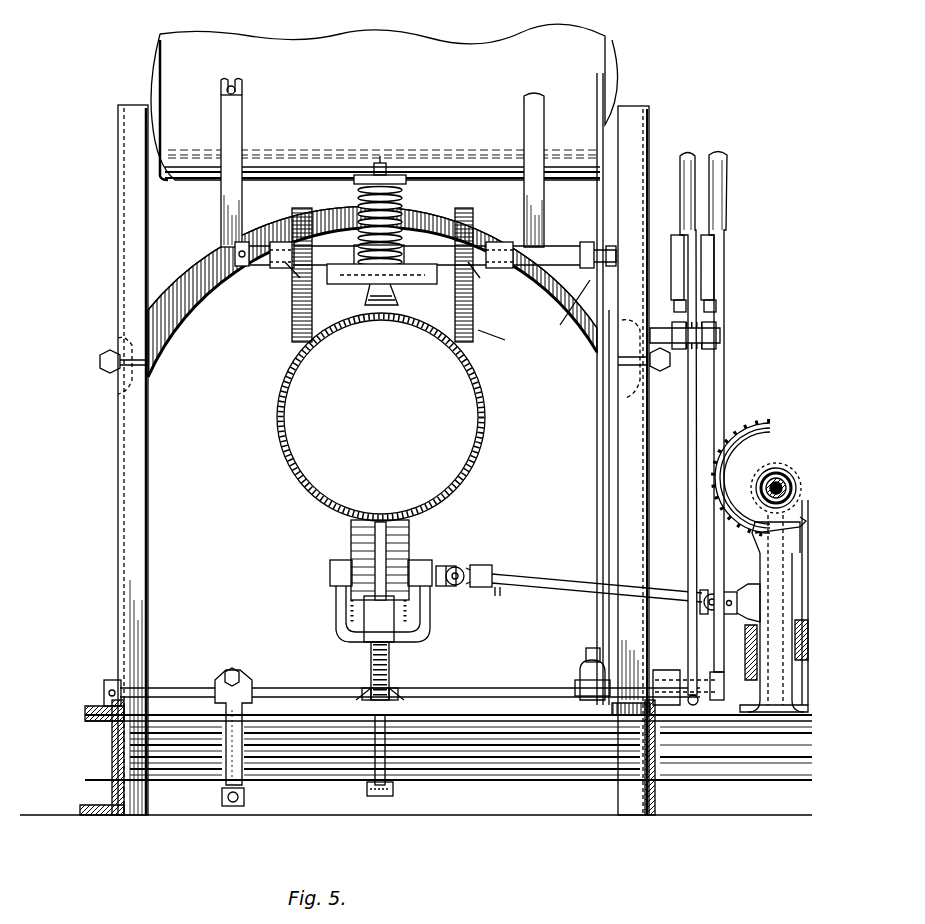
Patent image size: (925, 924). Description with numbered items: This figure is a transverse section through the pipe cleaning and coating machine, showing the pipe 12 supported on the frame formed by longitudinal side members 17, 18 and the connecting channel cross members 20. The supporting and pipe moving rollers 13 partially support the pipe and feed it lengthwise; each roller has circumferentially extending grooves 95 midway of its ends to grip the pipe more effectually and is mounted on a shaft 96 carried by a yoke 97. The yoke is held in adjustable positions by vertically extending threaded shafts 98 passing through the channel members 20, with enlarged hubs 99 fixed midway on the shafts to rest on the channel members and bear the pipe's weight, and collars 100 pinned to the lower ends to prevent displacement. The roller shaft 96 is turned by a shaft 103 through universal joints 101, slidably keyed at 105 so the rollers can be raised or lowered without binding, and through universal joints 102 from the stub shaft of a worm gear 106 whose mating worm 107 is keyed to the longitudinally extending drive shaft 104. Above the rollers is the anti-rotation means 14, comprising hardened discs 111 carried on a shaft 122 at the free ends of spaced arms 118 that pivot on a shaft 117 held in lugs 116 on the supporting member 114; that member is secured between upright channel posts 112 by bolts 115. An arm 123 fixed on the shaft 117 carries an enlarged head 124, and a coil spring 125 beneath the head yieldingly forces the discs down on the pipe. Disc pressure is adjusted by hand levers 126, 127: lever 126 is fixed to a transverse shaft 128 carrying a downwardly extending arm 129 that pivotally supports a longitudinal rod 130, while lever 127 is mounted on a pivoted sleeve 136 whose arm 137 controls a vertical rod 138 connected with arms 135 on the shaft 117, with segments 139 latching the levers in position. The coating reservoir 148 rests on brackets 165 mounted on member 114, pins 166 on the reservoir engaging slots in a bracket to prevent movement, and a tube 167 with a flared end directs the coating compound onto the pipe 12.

The pipe 12 is at (277, 425).
The supporting and pipe moving rollers 13 is at (290, 596).
The upper rollers (anti-rotation means) 14 is at (484, 339).
The longitudinal side member 17 is at (110, 757).
The longitudinal side member 18 is at (640, 760).
The end and cross members 20 is at (416, 765).
The circumferentially extending grooves 95 is at (365, 538).
The roller shaft 96 is at (330, 574).
The yoke or frame 97 is at (336, 607).
The vertically extending threaded shafts 98 is at (371, 668).
The enlarged hubs or collars 99 is at (400, 700).
The collars 100 is at (396, 792).
The universal joints 101 is at (462, 566).
The universal joints 102 is at (700, 594).
The shaft 103 is at (545, 585).
The longitudinally extending shaft 104 is at (778, 480).
The sliding key 105 is at (497, 597).
The worm gears 106 is at (776, 690).
The worms 107 is at (762, 470).
The hardened discs 111 is at (292, 303).
The upright supporting posts 112 is at (650, 115).
The adjustable supporting member 114 is at (235, 316).
The bolts 115 is at (100, 362).
The spaced lugs 116 is at (262, 242).
The shaft 117 is at (235, 255).
The spaced arms 118 is at (270, 262).
The disc shaft 122 is at (348, 285).
The arm 123 is at (395, 225).
The enlarged head 124 is at (390, 180).
The coil spring 125 is at (404, 200).
The hand operated lever 126 is at (728, 165).
The hand operated lever 127 is at (694, 156).
The transverse shaft 128 is at (509, 688).
The downwardly extending arm 129 is at (252, 690).
The longitudinally extending rod 130 is at (246, 798).
The arm 135 is at (590, 280).
The pivotally supported sleeve 136 is at (614, 712).
The arm 137 is at (585, 688).
The vertically extending rod 138 is at (596, 462).
The segments 139 is at (713, 330).
The reservoir 148 is at (384, 102).
The brackets 165 is at (236, 118).
The pins 166 is at (236, 90).
The tube 167 is at (397, 305).